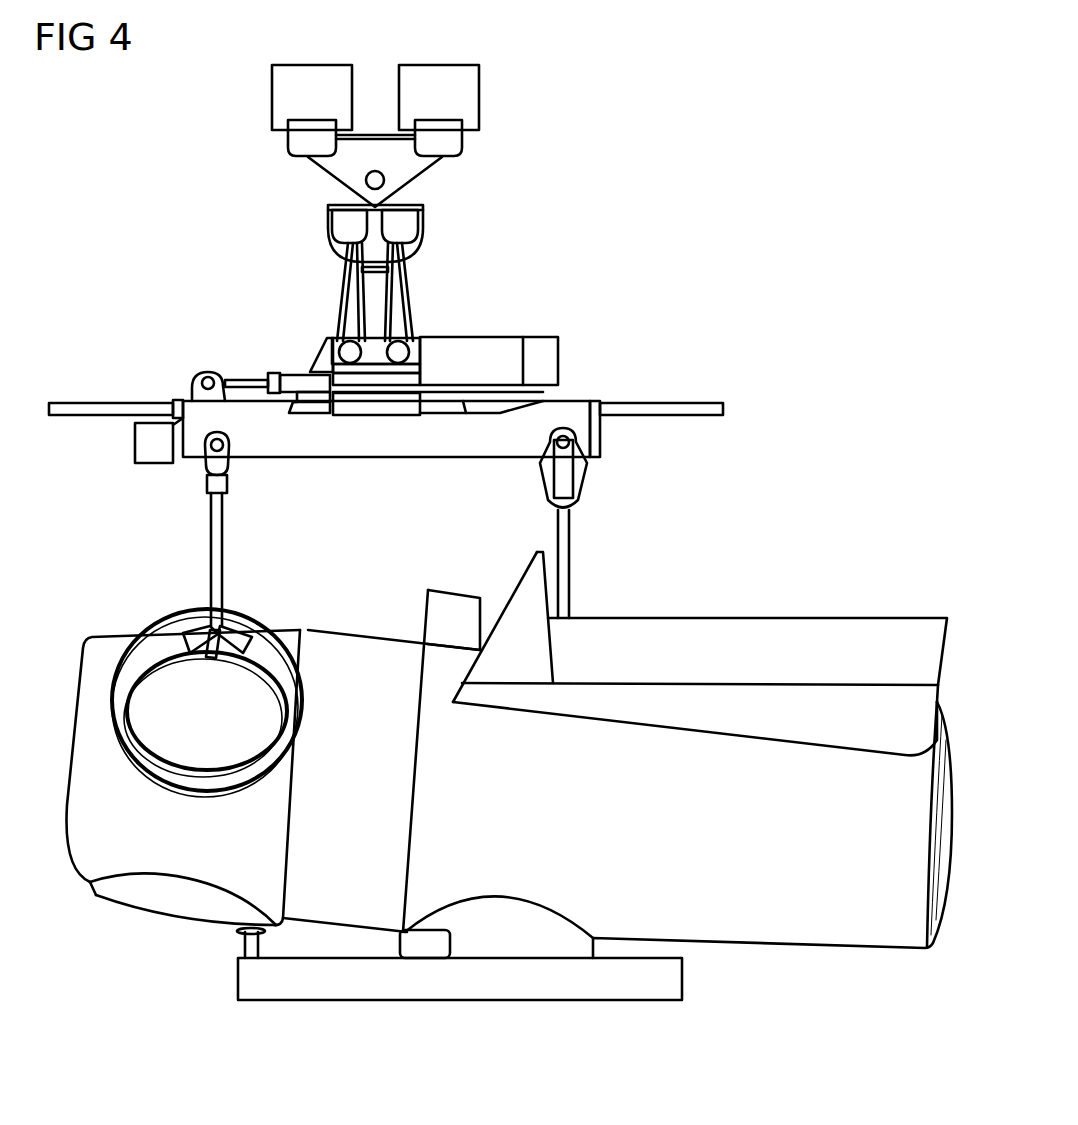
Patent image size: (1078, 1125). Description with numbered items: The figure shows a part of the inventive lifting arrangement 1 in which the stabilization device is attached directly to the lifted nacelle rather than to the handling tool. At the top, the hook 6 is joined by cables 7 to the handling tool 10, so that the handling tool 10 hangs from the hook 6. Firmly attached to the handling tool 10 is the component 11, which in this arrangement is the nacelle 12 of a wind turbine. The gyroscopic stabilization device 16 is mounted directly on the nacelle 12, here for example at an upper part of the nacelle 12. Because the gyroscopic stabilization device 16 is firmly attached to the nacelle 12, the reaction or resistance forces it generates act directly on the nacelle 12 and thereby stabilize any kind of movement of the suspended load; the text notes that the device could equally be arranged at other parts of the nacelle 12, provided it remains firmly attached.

The lifting arrangement 1 is at (682, 200).
The hook 6 is at (423, 228).
The cables 7 is at (412, 299).
The handling tool 10 is at (573, 407).
The component 11 is at (884, 588).
The nacelle 12 is at (815, 928).
The gyroscopic stabilization device 16 is at (453, 605).